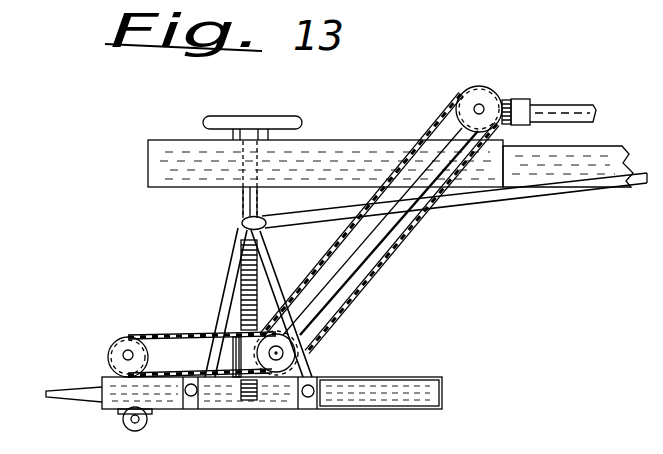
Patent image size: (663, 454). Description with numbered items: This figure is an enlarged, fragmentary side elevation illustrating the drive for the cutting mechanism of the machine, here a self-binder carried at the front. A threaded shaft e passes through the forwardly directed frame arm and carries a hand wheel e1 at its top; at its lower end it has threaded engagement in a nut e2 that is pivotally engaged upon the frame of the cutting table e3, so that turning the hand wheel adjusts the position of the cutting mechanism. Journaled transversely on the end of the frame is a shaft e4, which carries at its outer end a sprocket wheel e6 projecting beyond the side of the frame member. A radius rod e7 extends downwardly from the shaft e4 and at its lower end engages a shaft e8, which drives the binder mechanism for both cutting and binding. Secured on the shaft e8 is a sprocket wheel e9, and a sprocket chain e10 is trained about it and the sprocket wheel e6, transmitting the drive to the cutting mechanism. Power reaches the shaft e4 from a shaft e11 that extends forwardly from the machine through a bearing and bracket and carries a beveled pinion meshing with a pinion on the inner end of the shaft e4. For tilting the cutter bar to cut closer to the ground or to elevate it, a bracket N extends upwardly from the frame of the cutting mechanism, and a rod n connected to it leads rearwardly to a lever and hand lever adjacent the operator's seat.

The threaded shaft e is at (243, 204).
The hand wheel e1 is at (293, 121).
The nut e2 is at (318, 330).
The cutting table e3 is at (415, 392).
The shaft e4 is at (482, 106).
The sprocket wheel e6 is at (473, 100).
The radius rod e7 is at (343, 270).
The shaft e8 is at (284, 355).
The sprocket wheel e9 is at (330, 368).
The sprocket chain e10 is at (410, 243).
The shaft e11 is at (563, 108).
The rod n is at (468, 205).
The bracket N is at (283, 301).